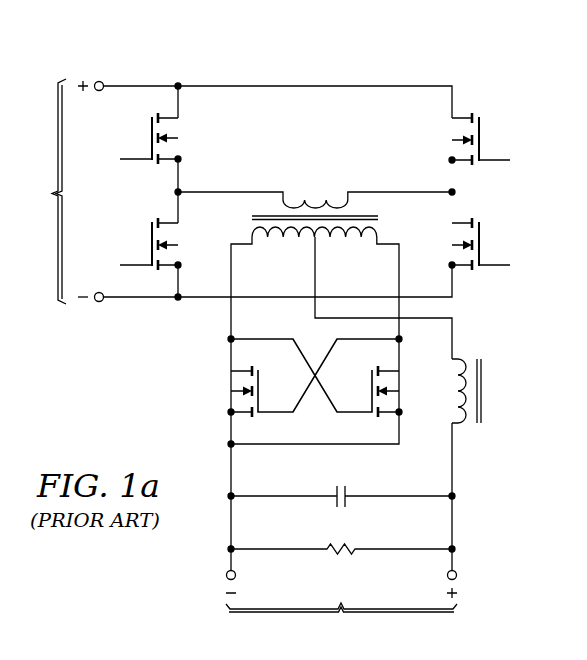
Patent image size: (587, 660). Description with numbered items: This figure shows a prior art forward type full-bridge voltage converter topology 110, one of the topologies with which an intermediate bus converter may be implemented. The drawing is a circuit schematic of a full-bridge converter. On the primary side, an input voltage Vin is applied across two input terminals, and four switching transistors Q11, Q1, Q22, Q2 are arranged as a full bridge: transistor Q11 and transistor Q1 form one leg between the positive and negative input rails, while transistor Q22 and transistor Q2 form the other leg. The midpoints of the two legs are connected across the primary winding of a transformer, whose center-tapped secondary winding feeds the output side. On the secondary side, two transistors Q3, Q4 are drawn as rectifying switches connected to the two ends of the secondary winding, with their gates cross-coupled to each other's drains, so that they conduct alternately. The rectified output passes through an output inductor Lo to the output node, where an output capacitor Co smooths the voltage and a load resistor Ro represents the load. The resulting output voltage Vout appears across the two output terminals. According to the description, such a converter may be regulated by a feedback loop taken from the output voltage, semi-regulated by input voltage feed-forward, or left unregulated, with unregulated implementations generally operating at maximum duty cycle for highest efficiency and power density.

The forward type full-bridge voltage converter topology 110 is at (250, 60).
The primary high-side switch transistor Q11 is at (167, 138).
The primary low-side switch transistor Q1 is at (164, 244).
The primary high-side switch transistor Q22 is at (461, 139).
The primary low-side switch transistor Q2 is at (466, 244).
The synchronous rectifier transistor Q3 is at (300, 391).
The synchronous rectifier transistor Q4 is at (330, 390).
The output inductor Lo is at (481, 391).
The output capacitor Co is at (341, 486).
The load resistor Ro is at (341, 537).
The input voltage Vin is at (42, 191).
The output voltage Vout is at (341, 623).